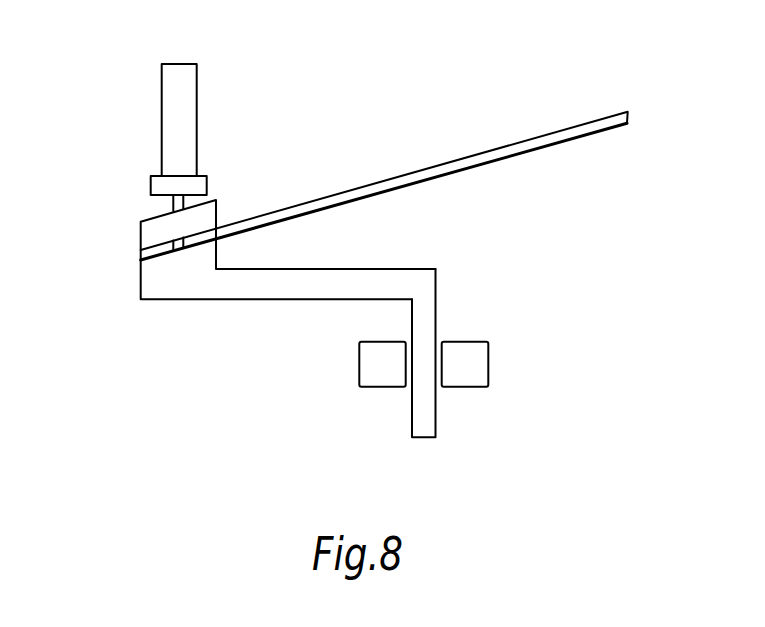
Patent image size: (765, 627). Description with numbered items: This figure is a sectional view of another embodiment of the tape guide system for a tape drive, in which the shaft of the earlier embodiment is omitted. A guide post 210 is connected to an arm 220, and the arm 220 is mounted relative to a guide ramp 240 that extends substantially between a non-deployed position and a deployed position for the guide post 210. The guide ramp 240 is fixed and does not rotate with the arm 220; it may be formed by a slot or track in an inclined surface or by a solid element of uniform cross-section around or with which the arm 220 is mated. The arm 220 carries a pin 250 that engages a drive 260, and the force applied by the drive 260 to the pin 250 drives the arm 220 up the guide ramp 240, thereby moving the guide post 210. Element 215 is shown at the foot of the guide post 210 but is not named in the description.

The guide post 210 is at (170, 108).
The flange / foot of rod 215 is at (157, 187).
The arm 220 is at (360, 280).
The guide ramp 240 is at (491, 151).
The pin 250 is at (416, 413).
The drive 260 is at (368, 363).